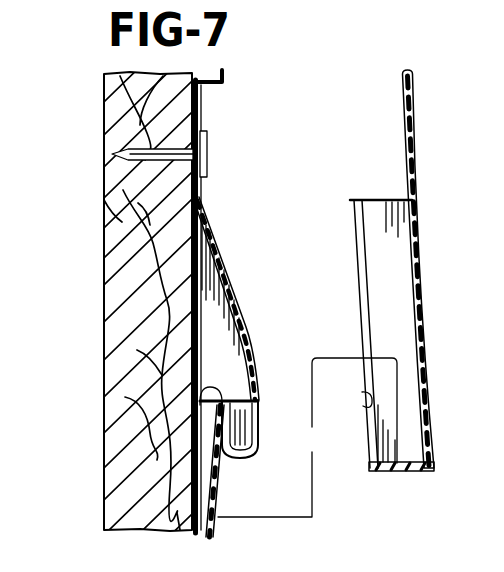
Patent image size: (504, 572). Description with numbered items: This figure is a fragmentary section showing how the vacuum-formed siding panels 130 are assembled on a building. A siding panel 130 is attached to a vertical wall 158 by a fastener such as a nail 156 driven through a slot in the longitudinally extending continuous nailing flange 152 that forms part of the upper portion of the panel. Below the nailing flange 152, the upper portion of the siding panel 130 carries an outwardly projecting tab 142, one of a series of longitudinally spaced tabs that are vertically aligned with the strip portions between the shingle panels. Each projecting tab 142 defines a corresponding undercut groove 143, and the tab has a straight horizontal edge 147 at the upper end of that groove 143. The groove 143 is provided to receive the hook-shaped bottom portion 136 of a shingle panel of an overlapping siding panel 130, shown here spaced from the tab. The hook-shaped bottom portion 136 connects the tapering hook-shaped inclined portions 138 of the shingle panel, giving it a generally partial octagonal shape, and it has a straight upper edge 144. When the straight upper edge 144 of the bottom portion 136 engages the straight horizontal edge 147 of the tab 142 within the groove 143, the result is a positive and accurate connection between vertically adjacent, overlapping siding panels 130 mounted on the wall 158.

The siding panel 130 is at (223, 223).
The hook-shaped bottom portion 136 is at (408, 476).
The tapering hook-shaped inclined portion 138 is at (405, 288).
The projecting tab 142 is at (233, 297).
The undercut groove 143 is at (257, 401).
The straight upper edge 144 is at (362, 392).
The straight horizontal edge 147 is at (206, 390).
The nailing flange 152 is at (203, 103).
The nail 156 is at (138, 150).
The vertical wall 158 is at (116, 253).